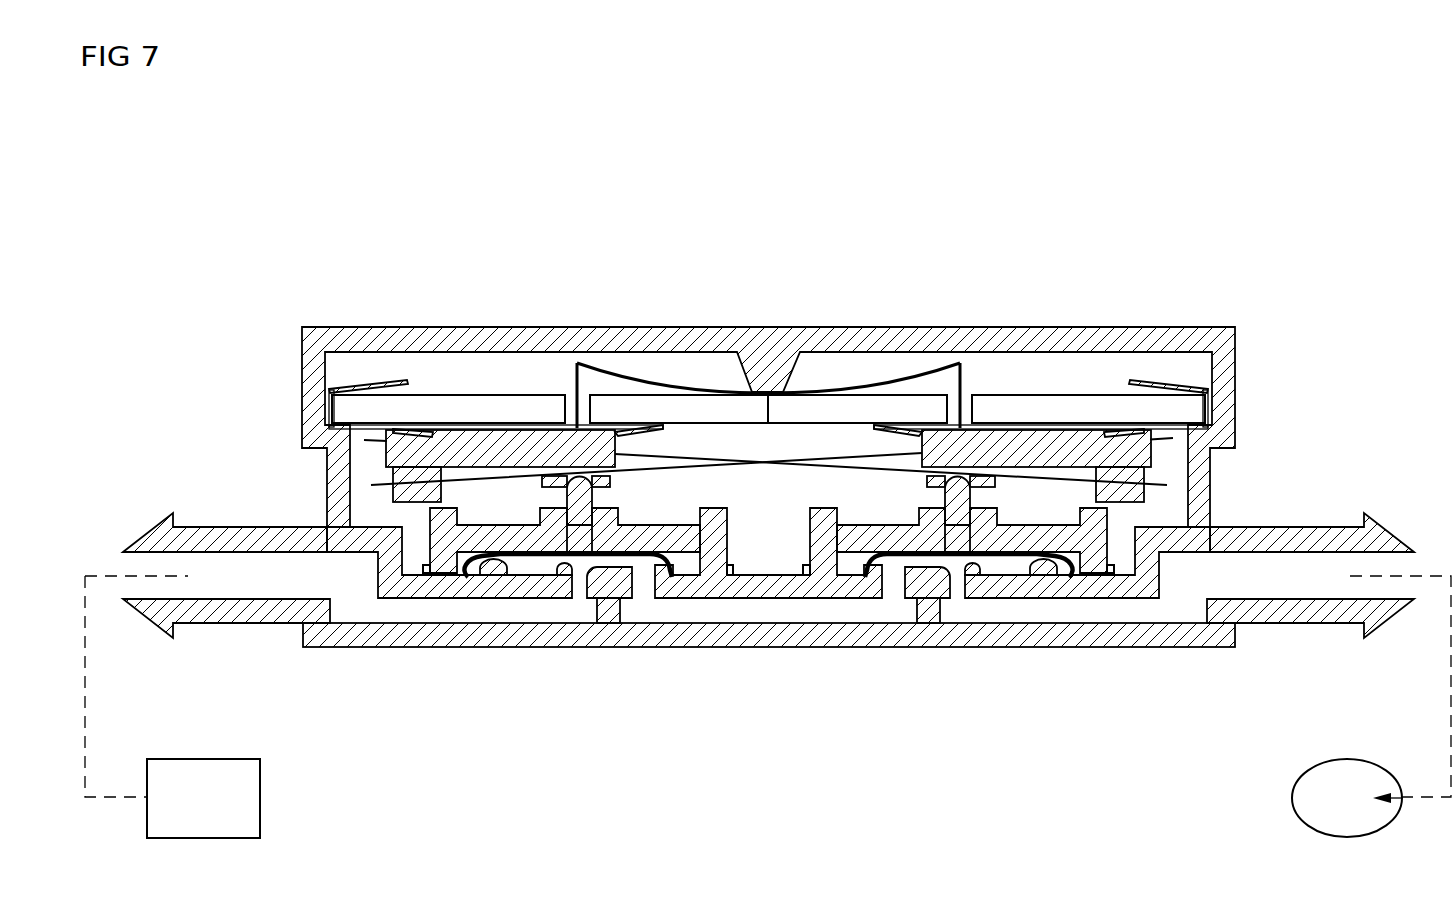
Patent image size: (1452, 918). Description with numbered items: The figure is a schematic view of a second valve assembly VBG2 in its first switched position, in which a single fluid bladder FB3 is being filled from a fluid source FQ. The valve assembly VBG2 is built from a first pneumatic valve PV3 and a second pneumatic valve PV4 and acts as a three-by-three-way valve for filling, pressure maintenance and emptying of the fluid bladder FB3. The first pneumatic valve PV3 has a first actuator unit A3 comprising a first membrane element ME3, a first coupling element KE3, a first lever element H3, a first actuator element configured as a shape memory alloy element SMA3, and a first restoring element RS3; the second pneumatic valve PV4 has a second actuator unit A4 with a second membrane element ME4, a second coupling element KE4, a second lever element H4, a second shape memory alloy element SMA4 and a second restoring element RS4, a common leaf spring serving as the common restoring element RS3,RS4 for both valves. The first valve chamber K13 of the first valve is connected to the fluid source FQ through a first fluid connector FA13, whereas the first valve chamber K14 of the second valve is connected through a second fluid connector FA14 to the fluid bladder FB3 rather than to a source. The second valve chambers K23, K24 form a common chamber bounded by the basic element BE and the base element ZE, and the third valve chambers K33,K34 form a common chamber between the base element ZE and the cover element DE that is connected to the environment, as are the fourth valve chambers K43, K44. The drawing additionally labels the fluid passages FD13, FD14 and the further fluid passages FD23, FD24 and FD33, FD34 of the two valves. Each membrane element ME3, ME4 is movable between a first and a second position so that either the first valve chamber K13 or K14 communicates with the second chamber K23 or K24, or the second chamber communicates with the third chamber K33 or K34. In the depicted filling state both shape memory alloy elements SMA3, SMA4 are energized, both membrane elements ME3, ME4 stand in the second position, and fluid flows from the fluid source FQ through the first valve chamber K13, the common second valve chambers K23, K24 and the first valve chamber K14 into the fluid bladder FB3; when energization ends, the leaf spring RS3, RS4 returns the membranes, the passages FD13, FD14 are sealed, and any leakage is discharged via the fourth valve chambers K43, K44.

The second valve assembly VBG2 is at (988, 148).
The first pneumatic valve PV3 is at (441, 216).
The second pneumatic valve PV4 is at (1096, 216).
The first lever element H3 is at (418, 455).
The second lever element H4 is at (1085, 452).
The first shape memory alloy element SMA3 is at (472, 478).
The second shape memory alloy element SMA4 is at (1062, 470).
The spring element of first pilot valve FD33 is at (598, 515).
The spring element of second pilot valve FD34 is at (937, 478).
The first restoring element RS3 is at (683, 375).
The second restoring element RS4 is at (864, 395).
The first and second restoring elements RS3,RS4 is at (768, 332).
The third valve chamber of the first pneumatic valve K33 is at (828, 492).
The third valve chamber of the second pneumatic valve K34 is at (857, 409).
The third valve chambers K33,K34 is at (768, 364).
The cover element DE is at (1182, 335).
The first actuator unit A3 is at (363, 500).
The second actuator unit A4 is at (1174, 500).
The first coupling element KE3 is at (587, 530).
The second coupling element KE4 is at (958, 530).
The first fluid connector FA13 is at (227, 610).
The second fluid connector FA14 is at (1300, 610).
The first valve chamber of the first pneumatic valve K13 is at (355, 592).
The first valve chamber of the second pneumatic valve K14 is at (1183, 592).
The first membrane element ME3 is at (483, 565).
The second membrane element ME4 is at (1052, 563).
The fluid passage FD13 is at (523, 588).
The first fluid passage element FD23 is at (607, 622).
The second fluid passage element FD24 is at (893, 585).
The fluid passage FD14 is at (958, 588).
The fourth valve chamber of the first pneumatic valve K43 is at (683, 600).
The fourth valve chamber of the second pneumatic valve K44 is at (1023, 563).
The second valve chamber of the first pneumatic valve K23 is at (768, 600).
The second valve chamber of the second pneumatic valve K24 is at (873, 610).
The base element ZE is at (780, 583).
The basic element BE is at (812, 637).
The fluid source FQ is at (260, 797).
The fluid bladder FB3 is at (1292, 800).